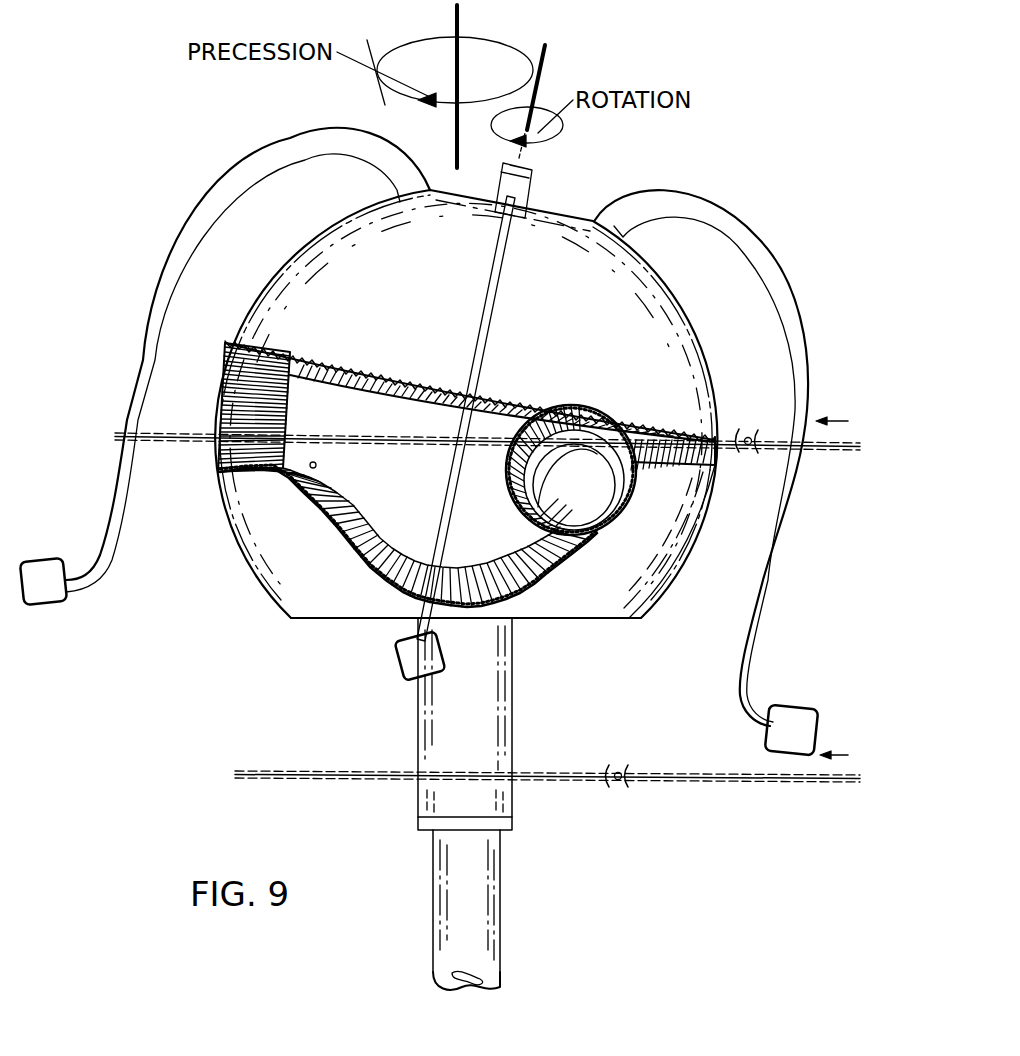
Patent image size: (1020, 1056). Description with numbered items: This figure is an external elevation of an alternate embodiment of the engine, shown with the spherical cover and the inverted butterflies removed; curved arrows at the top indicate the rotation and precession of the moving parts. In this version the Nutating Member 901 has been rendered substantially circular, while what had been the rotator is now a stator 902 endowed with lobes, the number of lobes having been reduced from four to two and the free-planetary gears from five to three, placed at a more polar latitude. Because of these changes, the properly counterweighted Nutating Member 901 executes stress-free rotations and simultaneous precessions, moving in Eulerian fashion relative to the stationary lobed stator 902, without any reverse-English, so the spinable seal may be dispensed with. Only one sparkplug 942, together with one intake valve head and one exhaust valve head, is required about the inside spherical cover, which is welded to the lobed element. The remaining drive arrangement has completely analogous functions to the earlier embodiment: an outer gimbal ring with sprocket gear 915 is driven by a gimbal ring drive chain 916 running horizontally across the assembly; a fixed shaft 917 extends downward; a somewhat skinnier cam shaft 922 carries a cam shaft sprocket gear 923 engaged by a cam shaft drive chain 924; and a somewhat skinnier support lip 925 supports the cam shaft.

The Nutating Member 901 is at (300, 247).
The stator 902 is at (235, 522).
The sparkplug 942 is at (235, 472).
The outer gimbal ring with sprocket gear 915 is at (748, 433).
The gimbal ring drive chain 916 is at (818, 452).
The cam shaft sprocket gear 923 is at (617, 771).
The cam shaft drive chain 924 is at (803, 781).
The support lip 925 is at (418, 826).
The cam shaft 922 is at (513, 811).
The fixed shaft 917 is at (437, 849).